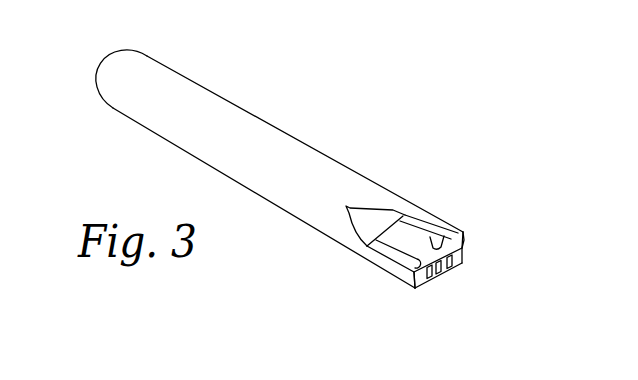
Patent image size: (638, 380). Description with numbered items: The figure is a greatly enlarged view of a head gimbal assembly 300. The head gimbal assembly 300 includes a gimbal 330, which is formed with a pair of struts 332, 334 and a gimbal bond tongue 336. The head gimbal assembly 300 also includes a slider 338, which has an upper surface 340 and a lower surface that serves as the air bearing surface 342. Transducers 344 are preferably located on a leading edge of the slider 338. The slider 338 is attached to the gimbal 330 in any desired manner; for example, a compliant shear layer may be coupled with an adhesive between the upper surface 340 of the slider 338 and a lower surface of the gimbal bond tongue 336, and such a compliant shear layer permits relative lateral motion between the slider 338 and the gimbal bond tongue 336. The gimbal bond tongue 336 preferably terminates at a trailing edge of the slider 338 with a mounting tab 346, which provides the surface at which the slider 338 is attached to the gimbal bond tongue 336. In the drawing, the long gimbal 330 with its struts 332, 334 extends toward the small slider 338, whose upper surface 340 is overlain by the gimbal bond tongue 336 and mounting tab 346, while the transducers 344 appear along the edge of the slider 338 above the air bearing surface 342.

The head gimbal assembly 300 is at (325, 100).
The gimbal 330 is at (225, 93).
The strut 332 is at (377, 258).
The strut 334 is at (420, 232).
The gimbal bond tongue 336 is at (461, 235).
The slider 338 is at (442, 284).
The upper surface 340 is at (421, 247).
The air bearing surface 342 is at (415, 291).
The transducers 344 is at (451, 268).
The mounting tab 346 is at (384, 222).